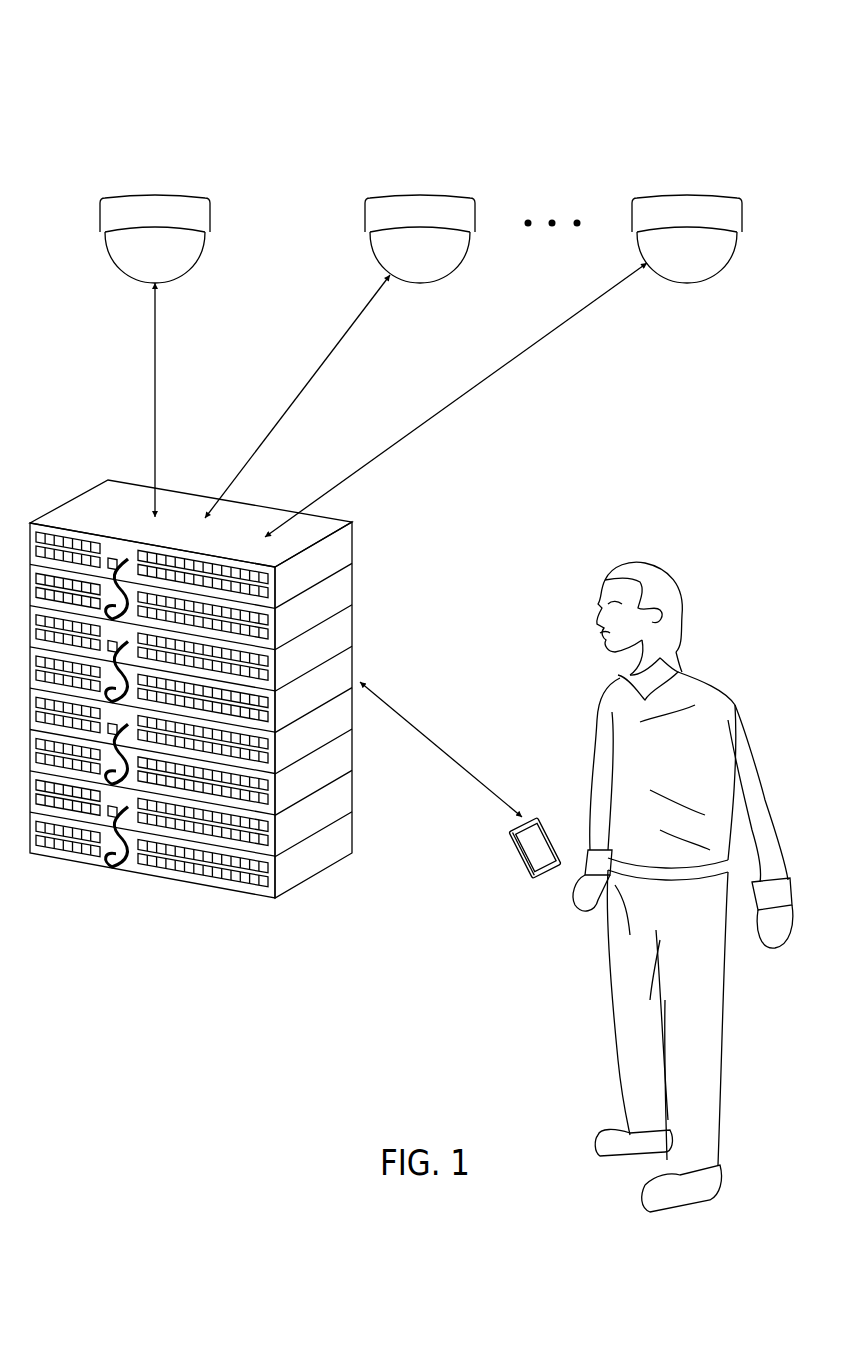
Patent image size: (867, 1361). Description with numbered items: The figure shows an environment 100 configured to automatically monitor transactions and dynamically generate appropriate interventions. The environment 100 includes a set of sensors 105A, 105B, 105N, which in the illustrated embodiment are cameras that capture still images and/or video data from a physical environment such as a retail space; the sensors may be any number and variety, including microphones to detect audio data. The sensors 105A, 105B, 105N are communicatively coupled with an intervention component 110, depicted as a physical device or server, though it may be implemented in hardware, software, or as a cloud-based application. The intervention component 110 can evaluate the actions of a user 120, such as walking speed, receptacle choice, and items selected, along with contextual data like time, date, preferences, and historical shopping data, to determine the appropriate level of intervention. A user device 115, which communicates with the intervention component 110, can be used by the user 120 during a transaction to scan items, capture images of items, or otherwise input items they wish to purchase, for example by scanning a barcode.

The environment 100 is at (137, 72).
The sensor 105A is at (160, 195).
The sensor 105B is at (425, 195).
The sensor 105N is at (692, 195).
The intervention component 110 is at (340, 550).
The user device 115 is at (517, 857).
The user 120 is at (710, 690).